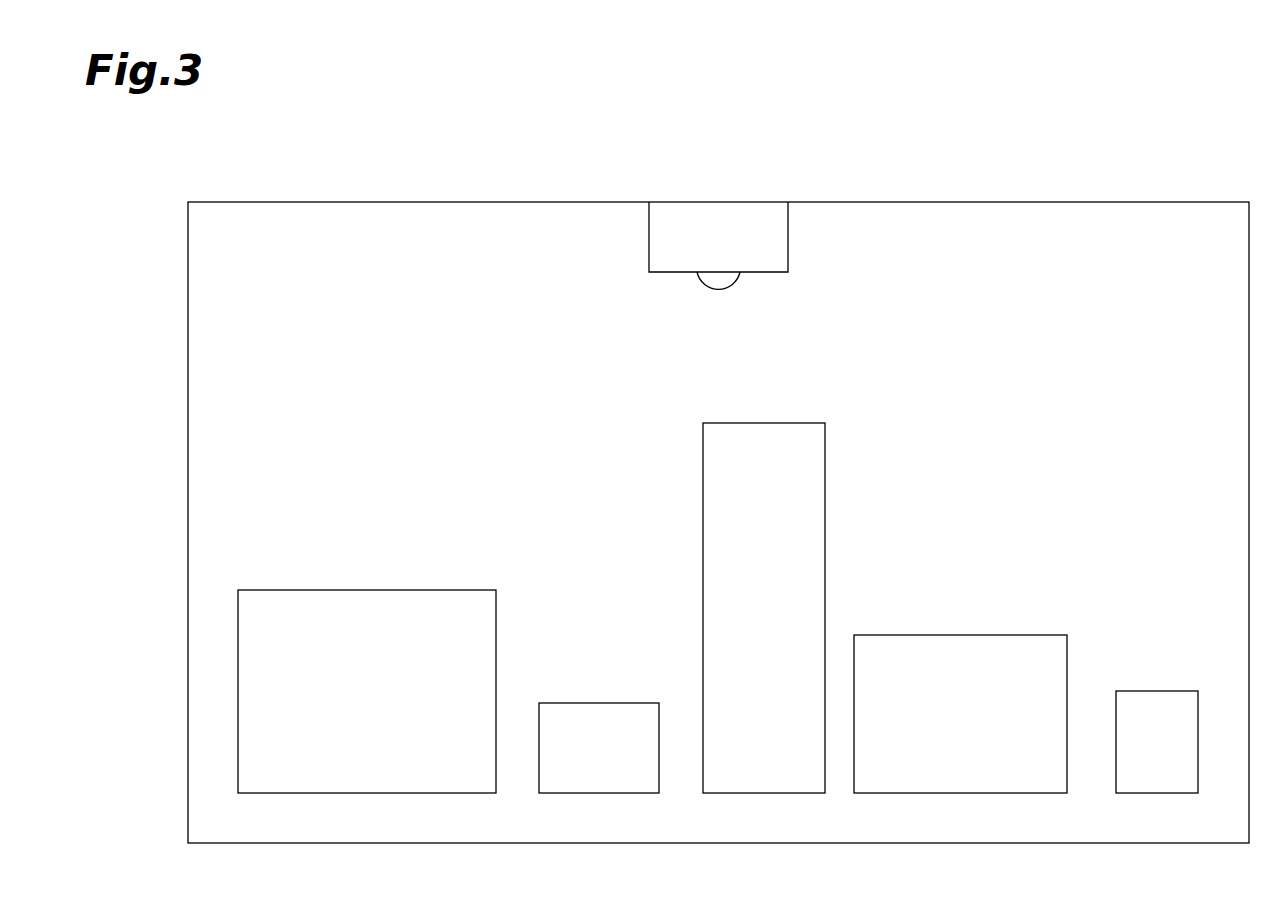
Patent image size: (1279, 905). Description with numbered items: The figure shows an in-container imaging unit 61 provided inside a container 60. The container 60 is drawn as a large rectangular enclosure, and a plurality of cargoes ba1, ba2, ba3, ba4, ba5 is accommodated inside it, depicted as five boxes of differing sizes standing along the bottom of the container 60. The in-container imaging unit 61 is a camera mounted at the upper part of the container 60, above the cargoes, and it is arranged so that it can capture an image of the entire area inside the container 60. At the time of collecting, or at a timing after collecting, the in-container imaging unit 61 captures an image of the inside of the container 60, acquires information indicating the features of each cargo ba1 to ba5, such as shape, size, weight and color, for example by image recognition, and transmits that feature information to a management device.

The container 60 is at (992, 140).
The in-container imaging unit 61 is at (793, 235).
The cargo ba1 is at (365, 590).
The cargo ba2 is at (597, 703).
The cargo ba3 is at (762, 423).
The cargo ba4 is at (958, 635).
The cargo ba5 is at (1155, 691).